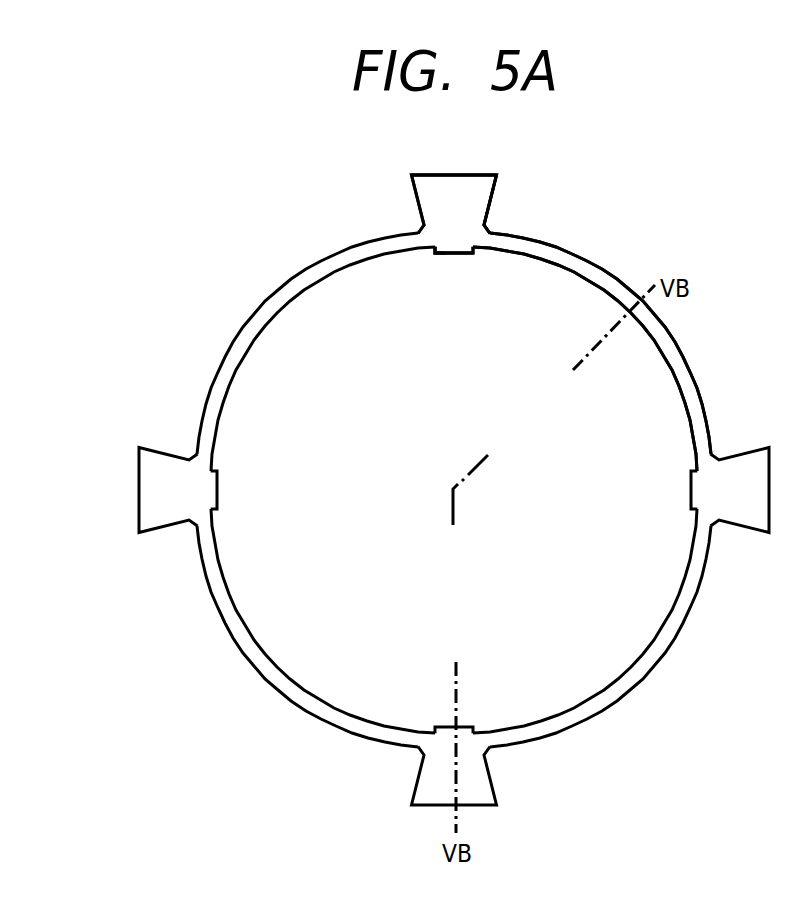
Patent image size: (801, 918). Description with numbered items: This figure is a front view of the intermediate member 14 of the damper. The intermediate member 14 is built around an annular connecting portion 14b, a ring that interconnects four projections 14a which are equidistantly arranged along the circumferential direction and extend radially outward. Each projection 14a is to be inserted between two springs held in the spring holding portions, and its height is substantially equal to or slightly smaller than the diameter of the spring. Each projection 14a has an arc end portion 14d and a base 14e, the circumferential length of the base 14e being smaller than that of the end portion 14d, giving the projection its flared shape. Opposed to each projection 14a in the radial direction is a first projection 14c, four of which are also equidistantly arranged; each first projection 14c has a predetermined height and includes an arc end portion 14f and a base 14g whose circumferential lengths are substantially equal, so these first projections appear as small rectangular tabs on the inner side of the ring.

The intermediate member 14 is at (574, 214).
The projection 14a is at (433, 185).
The annular connecting portion 14b is at (578, 262).
The first projection 14c is at (466, 255).
The arc end portion 14d is at (470, 175).
The base 14e is at (487, 222).
The arc end portion 14f is at (449, 255).
The base 14g is at (434, 254).